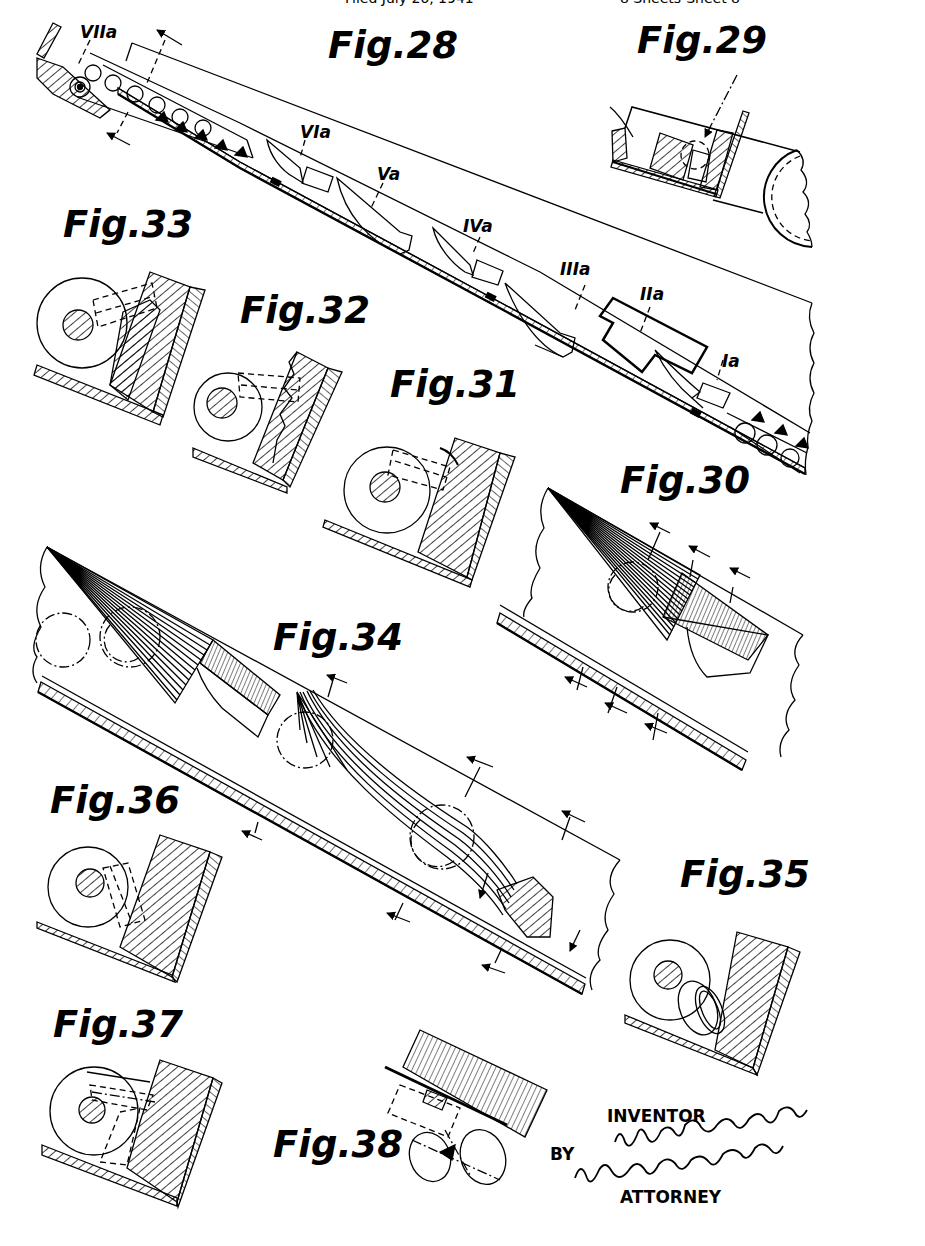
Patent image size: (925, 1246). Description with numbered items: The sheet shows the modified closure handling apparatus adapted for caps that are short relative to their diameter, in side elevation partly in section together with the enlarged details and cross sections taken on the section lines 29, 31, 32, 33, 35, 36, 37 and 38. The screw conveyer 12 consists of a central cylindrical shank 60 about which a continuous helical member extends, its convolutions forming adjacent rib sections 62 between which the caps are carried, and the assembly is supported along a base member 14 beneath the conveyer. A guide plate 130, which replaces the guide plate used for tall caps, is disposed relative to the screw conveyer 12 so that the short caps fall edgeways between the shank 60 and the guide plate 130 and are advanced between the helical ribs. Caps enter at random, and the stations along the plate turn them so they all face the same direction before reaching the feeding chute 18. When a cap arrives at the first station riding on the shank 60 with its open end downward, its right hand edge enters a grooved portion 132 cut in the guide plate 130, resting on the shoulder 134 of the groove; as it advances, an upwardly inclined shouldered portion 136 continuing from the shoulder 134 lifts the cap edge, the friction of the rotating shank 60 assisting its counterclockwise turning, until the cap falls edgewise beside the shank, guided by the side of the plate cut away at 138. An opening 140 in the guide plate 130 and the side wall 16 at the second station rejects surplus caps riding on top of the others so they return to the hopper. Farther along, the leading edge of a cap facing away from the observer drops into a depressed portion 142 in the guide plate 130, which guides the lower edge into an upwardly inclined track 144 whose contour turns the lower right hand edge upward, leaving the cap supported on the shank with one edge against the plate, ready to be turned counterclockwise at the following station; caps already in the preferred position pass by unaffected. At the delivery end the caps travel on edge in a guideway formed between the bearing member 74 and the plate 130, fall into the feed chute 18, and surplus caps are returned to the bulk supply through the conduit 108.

In FIG. 28, the screw conveyer 12 is at (233, 128).
In FIG. 29, the screw conveyer 12 is at (735, 97).
In FIG. 28, the base rail plate 14 is at (470, 300).
In FIG. 29, the base rail plate 14 is at (677, 174).
In FIG. 33, the base rail plate 14 is at (103, 400).
In FIG. 32, the base rail plate 14 is at (250, 467).
In FIG. 31, the base rail plate 14 is at (413, 560).
In FIG. 30, the base rail plate 14 is at (622, 687).
In FIG. 34, the base rail plate 14 is at (357, 867).
In FIG. 36, the base rail plate 14 is at (100, 950).
In FIG. 35, the base rail plate 14 is at (673, 1043).
In FIG. 37, the base rail plate 14 is at (80, 1173).
In FIG. 28, the side wall 16 is at (488, 188).
In FIG. 29, the side wall 16 is at (745, 130).
In FIG. 33, the side wall 16 is at (202, 325).
In FIG. 32, the side wall 16 is at (312, 427).
In FIG. 31, the side wall 16 is at (487, 510).
In FIG. 36, the side wall 16 is at (193, 928).
In FIG. 35, the side wall 16 is at (767, 1027).
In FIG. 37, the side wall 16 is at (200, 1150).
In FIG. 28, the feeding chute 18 is at (63, 113).
In FIG. 28, the section line 29— 29 is at (161, 96).
In FIG. 30, the section line 31— 31 is at (699, 653).
In FIG. 30, the section line 32— 32 is at (661, 632).
In FIG. 30, the section line 33— 33 is at (619, 609).
In FIG. 34, the section line 35— 35 is at (534, 893).
In FIG. 34, the section line 36— 36 is at (440, 843).
In FIG. 34, the section line 37— 37 is at (306, 765).
In FIG. 34, the section line 38— 38 is at (540, 901).
In FIG. 28, the shank 60 is at (233, 167).
In FIG. 29, the shank 60 is at (673, 130).
In FIG. 33, the shank 60 is at (78, 340).
In FIG. 32, the shank 60 is at (200, 433).
In FIG. 31, the shank 60 is at (367, 497).
In FIG. 36, the shank 60 is at (83, 897).
In FIG. 35, the shank 60 is at (663, 980).
In FIG. 37, the shank 60 is at (83, 1100).
In FIG. 28, the rib sections 62 is at (177, 104).
In FIG. 29, the rib sections 62 is at (695, 155).
In FIG. 33, the rib sections 62 is at (70, 282).
In FIG. 32, the rib sections 62 is at (233, 372).
In FIG. 31, the rib sections 62 is at (347, 482).
In FIG. 36, the rib sections 62 is at (73, 842).
In FIG. 35, the rib sections 62 is at (663, 933).
In FIG. 37, the rib sections 62 is at (73, 1072).
In FIG. 29, the bearing member 74 is at (611, 115).
In FIG. 29, the conduit 108 is at (786, 241).
In FIG. 28, the guide plate 130 is at (580, 307).
In FIG. 29, the guide plate 130 is at (740, 110).
In FIG. 33, the guide plate 130 is at (190, 290).
In FIG. 32, the guide plate 130 is at (320, 393).
In FIG. 31, the guide plate 130 is at (487, 453).
In FIG. 30, the guide plate 130 is at (747, 723).
In FIG. 34, the guide plate 130 is at (393, 747).
In FIG. 36, the guide plate 130 is at (213, 827).
In FIG. 35, the guide plate 130 is at (753, 937).
In FIG. 37, the guide plate 130 is at (207, 1067).
In FIG. 38, the guide plate 130 is at (503, 1063).
In FIG. 31, the grooved portion 132 is at (438, 448).
In FIG. 30, the grooved portion 132 is at (750, 627).
In FIG. 34, the grooved portion 132 is at (240, 677).
In FIG. 28, the shoulder 134 is at (693, 400).
In FIG. 31, the shoulder 134 is at (443, 470).
In FIG. 30, the shoulder 134 is at (718, 647).
In FIG. 34, the shoulder 134 is at (250, 713).
In FIG. 28, the upwardly inclined shouldered portion 136 is at (677, 380).
In FIG. 33, the upwardly inclined shouldered portion 136 is at (130, 410).
In FIG. 32, the upwardly inclined shouldered portion 136 is at (293, 427).
In FIG. 30, the upwardly inclined shouldered portion 136 is at (657, 627).
In FIG. 33, the cut-away portion 138 is at (127, 290).
In FIG. 32, the cut-away portion 138 is at (280, 373).
In FIG. 30, the cut-away portion 138 is at (633, 587).
In FIG. 34, the cut-away portion 138 is at (157, 680).
In FIG. 36, the cut-away portion 138 is at (124, 895).
In FIG. 37, the cut-away portion 138 is at (121, 1118).
In FIG. 28, the opening 140 is at (657, 330).
In FIG. 28, the depressed portion 142 is at (562, 340).
In FIG. 34, the depressed portion 142 is at (550, 887).
In FIG. 35, the depressed portion 142 is at (703, 1050).
In FIG. 38, the depressed portion 142 is at (433, 1083).
In FIG. 28, the upwardly inclined track 144 is at (525, 322).
In FIG. 34, the upwardly inclined track 144 is at (507, 920).
In FIG. 38, the upwardly inclined track 144 is at (407, 1070).